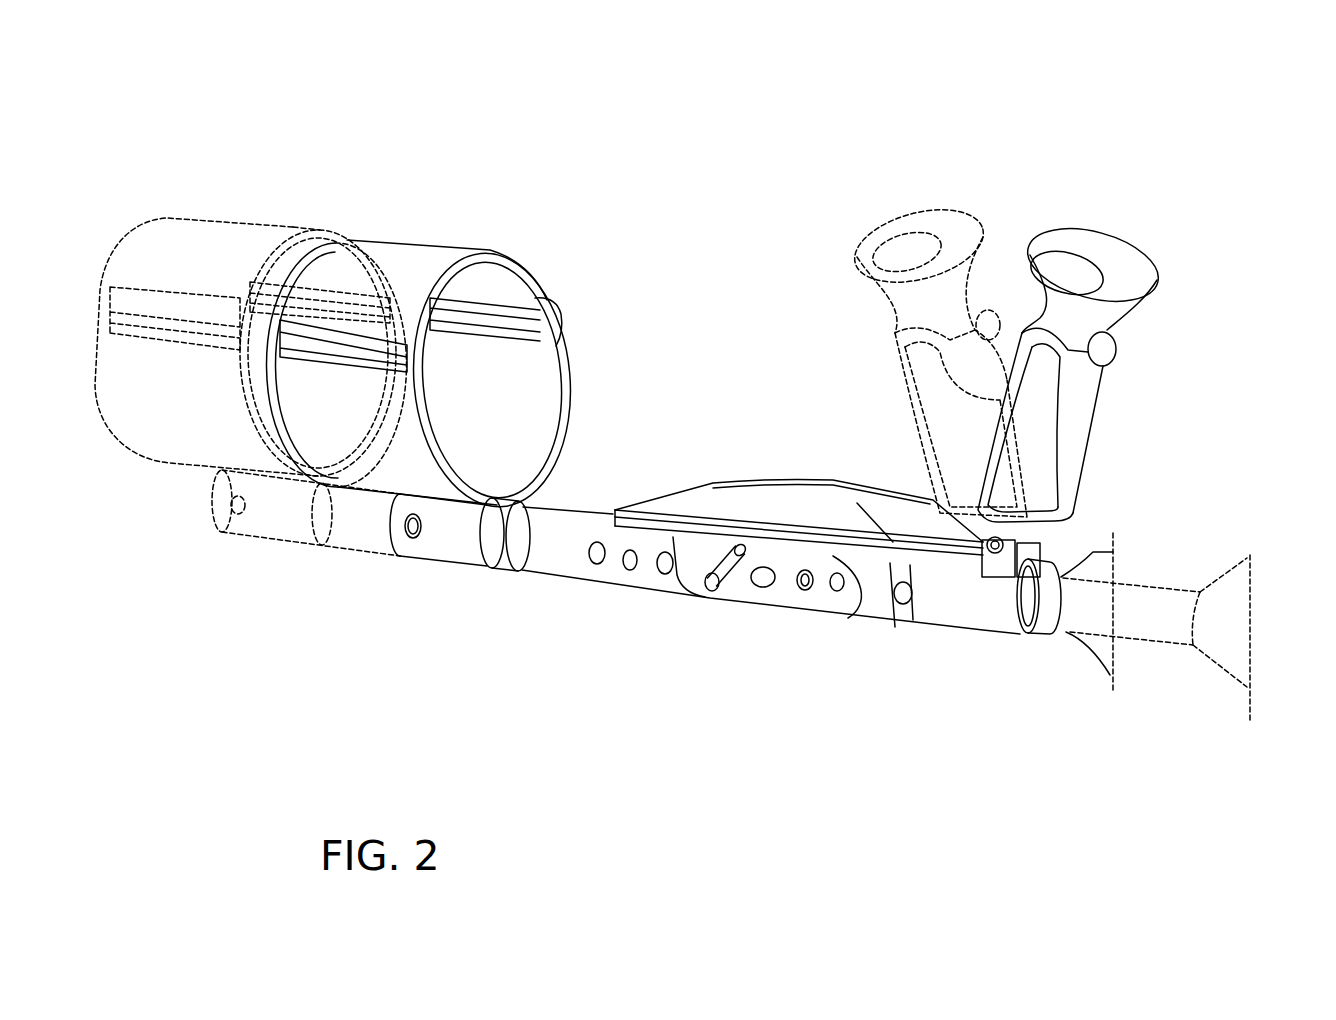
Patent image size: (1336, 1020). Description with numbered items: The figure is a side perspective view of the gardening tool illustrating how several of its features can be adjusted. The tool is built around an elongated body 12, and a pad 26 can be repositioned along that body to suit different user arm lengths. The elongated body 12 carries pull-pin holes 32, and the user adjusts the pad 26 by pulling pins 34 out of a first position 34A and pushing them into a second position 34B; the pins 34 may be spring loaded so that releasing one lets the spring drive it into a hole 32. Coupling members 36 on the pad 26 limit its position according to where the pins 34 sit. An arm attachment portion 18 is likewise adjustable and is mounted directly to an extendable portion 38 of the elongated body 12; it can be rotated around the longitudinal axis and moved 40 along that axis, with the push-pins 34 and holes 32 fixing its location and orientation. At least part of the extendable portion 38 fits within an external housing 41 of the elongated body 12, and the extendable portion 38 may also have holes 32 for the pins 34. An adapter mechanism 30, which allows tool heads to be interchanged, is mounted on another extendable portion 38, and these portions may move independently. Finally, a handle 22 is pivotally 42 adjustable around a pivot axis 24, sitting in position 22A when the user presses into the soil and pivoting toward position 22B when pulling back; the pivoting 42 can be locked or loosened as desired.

The elongated body 12 is at (940, 608).
The arm attachment portion 18 is at (462, 390).
The handle 22 is at (1083, 377).
The position 22A is at (1083, 431).
The position 22B is at (920, 278).
The pivot axis 24 is at (993, 550).
The pad 26 is at (779, 482).
The adapter mechanism 30 is at (1080, 645).
The pull-pin holes 32 is at (807, 573).
The pins 34 is at (762, 572).
The first position 34A is at (580, 558).
The second position 34B is at (722, 580).
The coupling members 36 is at (690, 555).
The extendable portion 38 is at (438, 522).
The movement 40 is at (270, 198).
The external housing 41 is at (547, 520).
The pivoting 42 is at (943, 197).